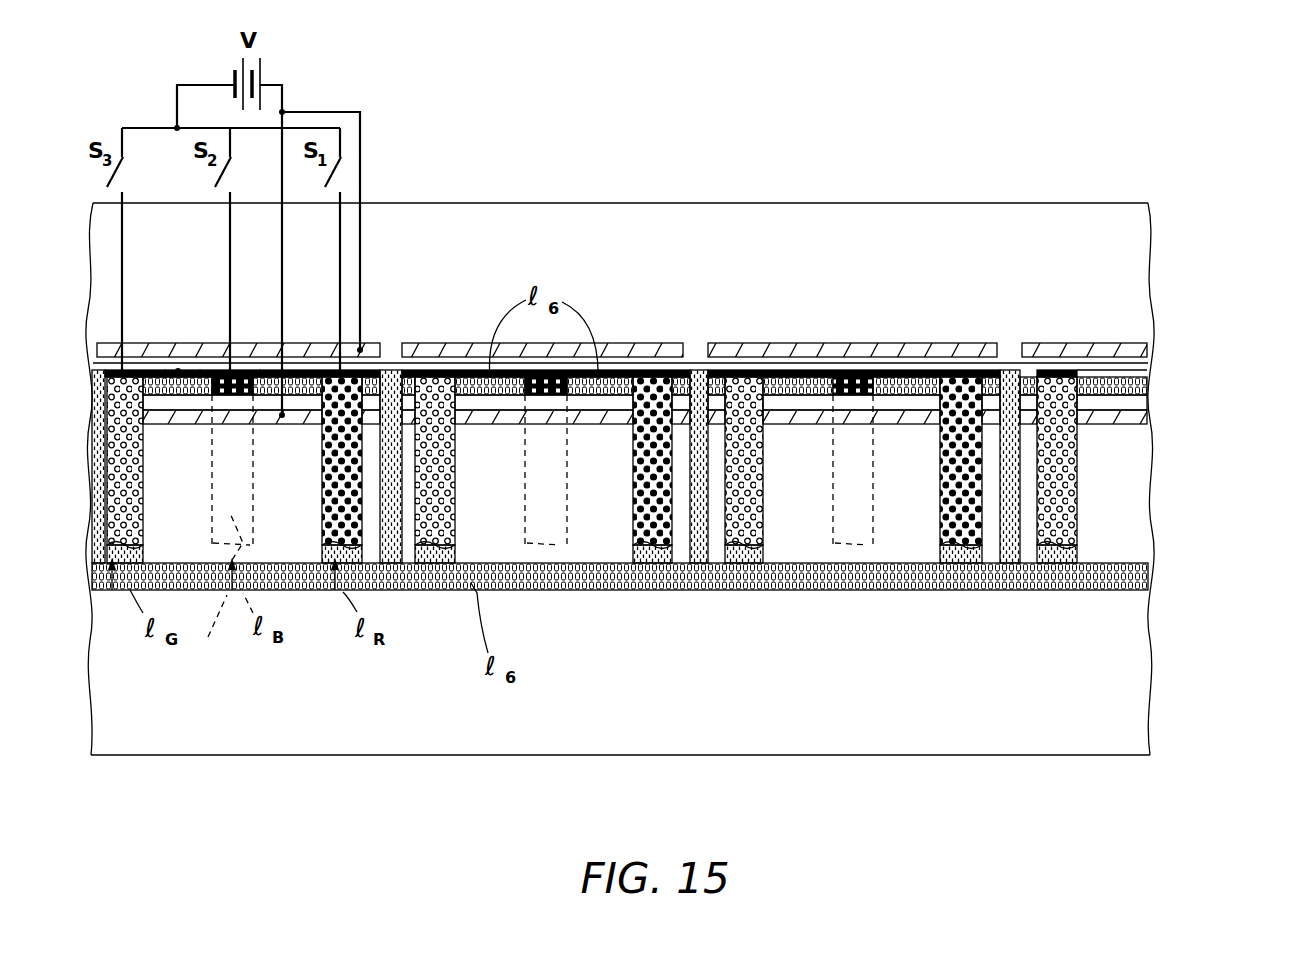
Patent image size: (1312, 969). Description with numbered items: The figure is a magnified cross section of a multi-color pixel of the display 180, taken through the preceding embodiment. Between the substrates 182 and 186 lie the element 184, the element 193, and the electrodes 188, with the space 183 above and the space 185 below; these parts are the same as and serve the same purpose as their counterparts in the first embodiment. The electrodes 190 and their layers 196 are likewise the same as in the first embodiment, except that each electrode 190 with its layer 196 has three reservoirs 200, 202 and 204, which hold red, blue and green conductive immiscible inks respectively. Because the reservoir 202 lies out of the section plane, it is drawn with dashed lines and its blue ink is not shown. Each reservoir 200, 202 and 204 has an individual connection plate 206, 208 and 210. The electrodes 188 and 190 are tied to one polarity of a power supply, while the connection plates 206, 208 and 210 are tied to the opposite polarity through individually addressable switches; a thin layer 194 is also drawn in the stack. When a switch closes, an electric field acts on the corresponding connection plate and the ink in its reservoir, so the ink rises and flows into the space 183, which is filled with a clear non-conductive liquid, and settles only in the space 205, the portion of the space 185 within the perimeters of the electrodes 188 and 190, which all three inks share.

The display device 180 is at (1036, 78).
The substrate 182 is at (1132, 248).
The space 183 is at (1195, 380).
The element 184 is at (1132, 483).
The space 185 is at (1195, 573).
The substrate 186 is at (1132, 668).
The electrode 188 is at (376, 342).
The electrode 190 is at (316, 425).
The element 193 is at (393, 545).
The conductive layer 194 is at (103, 364).
The layer 196 is at (267, 405).
The reservoir 200 is at (337, 590).
The reservoir 202 is at (218, 662).
The reservoir 204 is at (113, 592).
The space 205 is at (178, 368).
The connection plate 206 is at (338, 370).
The connection plate 208 is at (220, 370).
The connection plate 210 is at (117, 372).